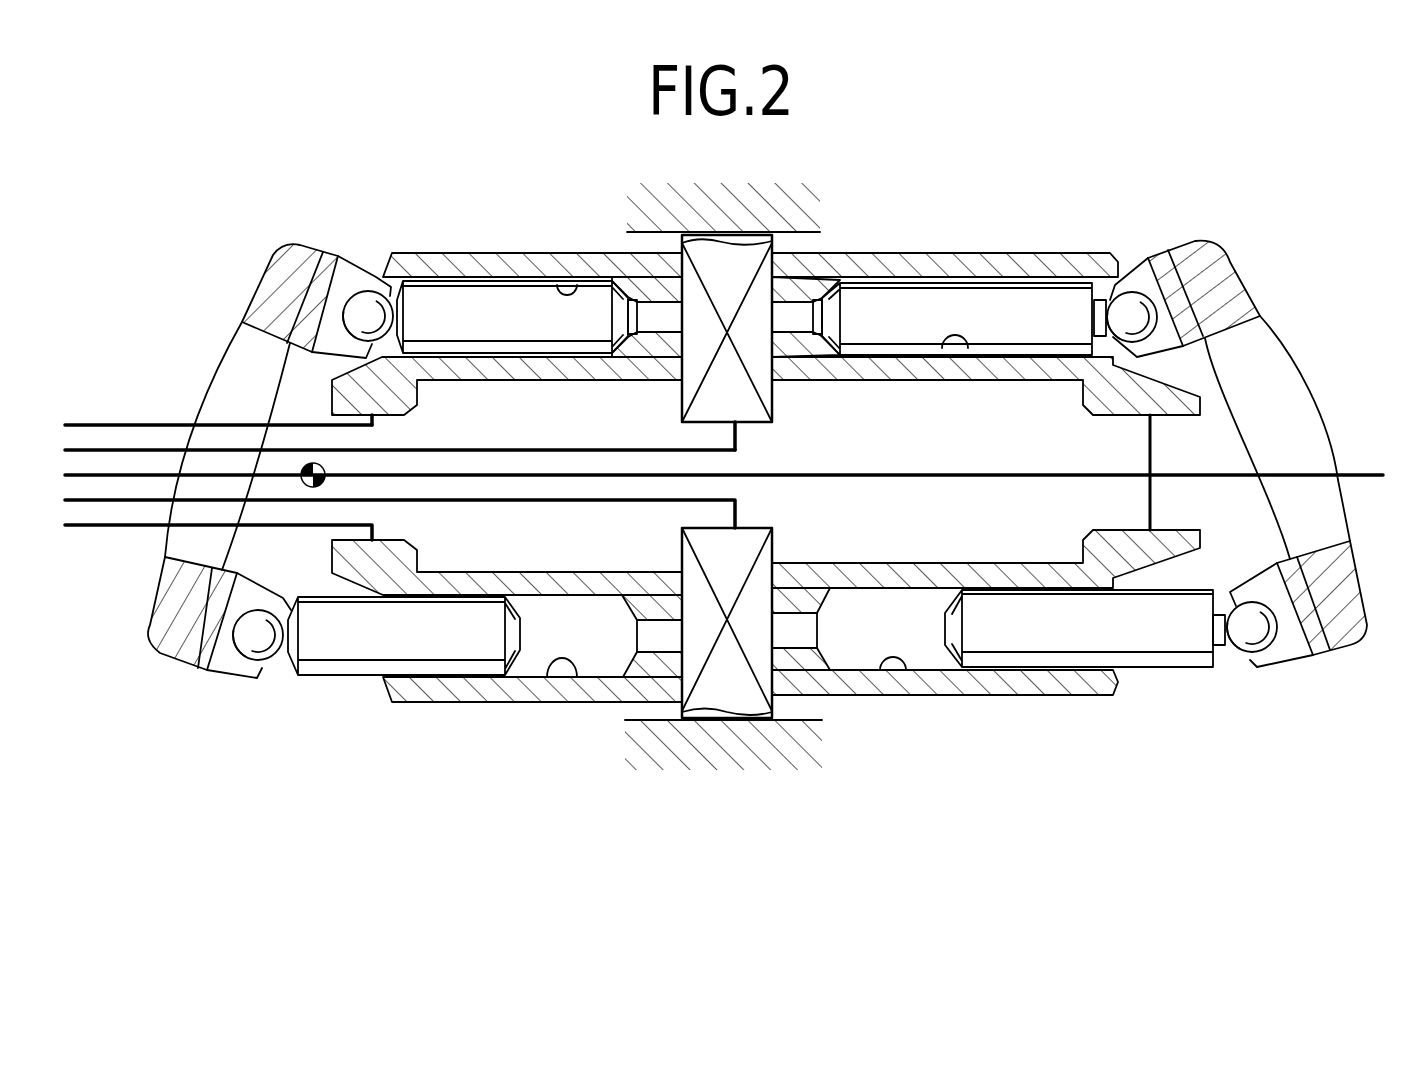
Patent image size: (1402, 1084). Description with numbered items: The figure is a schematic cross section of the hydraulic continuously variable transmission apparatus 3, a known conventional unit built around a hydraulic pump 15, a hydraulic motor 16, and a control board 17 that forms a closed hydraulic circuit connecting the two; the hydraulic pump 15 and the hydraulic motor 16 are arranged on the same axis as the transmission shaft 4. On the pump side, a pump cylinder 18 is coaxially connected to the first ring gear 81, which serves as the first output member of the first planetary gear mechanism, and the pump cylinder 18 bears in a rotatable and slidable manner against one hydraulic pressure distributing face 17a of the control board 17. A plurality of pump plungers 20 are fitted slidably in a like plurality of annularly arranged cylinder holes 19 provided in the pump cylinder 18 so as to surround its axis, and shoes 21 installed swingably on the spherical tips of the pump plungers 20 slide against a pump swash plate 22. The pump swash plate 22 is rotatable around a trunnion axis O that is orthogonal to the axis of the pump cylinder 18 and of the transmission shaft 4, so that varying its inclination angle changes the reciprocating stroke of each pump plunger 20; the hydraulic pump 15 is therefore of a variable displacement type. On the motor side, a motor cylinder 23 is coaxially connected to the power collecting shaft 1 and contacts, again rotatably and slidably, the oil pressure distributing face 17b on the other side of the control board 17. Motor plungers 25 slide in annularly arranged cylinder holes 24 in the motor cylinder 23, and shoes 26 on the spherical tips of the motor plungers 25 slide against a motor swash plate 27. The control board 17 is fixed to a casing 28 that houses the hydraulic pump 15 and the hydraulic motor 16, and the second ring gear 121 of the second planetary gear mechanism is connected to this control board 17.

The power collecting shaft 1 is at (1357, 467).
The hydraulic continuously variable transmission apparatus 3 is at (514, 712).
The transmission shaft 4 is at (852, 472).
The first ring gear 81 is at (115, 425).
The second ring gear 121 is at (527, 430).
The hydraulic pump 15 is at (506, 247).
The hydraulic motor 16 is at (938, 245).
The control board 17 is at (767, 390).
The hydraulic pressure distributing face 17a is at (677, 357).
The oil pressure distributing face 17b is at (780, 278).
The pump cylinder 18 is at (447, 262).
The cylinder holes 19 is at (567, 284).
The pump plungers 20 is at (487, 343).
The shoes 21 is at (347, 278).
The pump swash plate 22 is at (167, 634).
The motor cylinder 23 is at (1063, 267).
The cylinder holes 24 is at (958, 347).
The motor plungers 25 is at (1002, 307).
The shoes 26 is at (1285, 663).
The motor swash plate 27 is at (1246, 485).
The casing 28 is at (757, 740).
The trunnion axis O is at (322, 484).